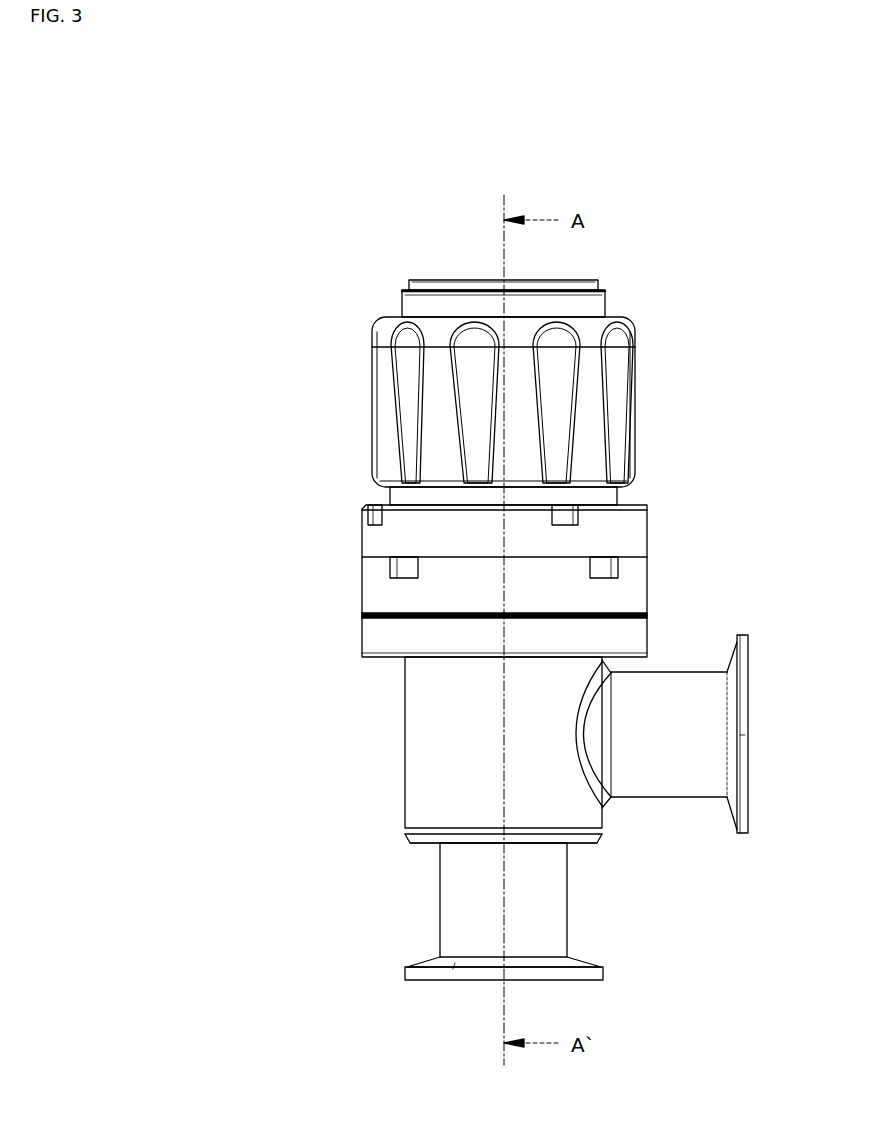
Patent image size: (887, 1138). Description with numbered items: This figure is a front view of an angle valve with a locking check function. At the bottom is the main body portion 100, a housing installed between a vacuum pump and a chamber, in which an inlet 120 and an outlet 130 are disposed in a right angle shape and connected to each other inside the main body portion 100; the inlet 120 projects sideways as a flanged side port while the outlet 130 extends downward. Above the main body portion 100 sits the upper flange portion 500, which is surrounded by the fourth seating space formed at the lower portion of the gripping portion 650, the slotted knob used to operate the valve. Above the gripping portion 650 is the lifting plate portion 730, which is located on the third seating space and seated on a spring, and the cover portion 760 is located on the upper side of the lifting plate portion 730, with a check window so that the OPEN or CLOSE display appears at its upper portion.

The cover portion 760 is at (473, 283).
The lifting plate portion 730 is at (457, 303).
The gripping portion 650 is at (437, 402).
The upper flange portion 500 is at (457, 577).
The main body portion 100 is at (482, 764).
The inlet 120 is at (658, 755).
The outlet 130 is at (462, 898).